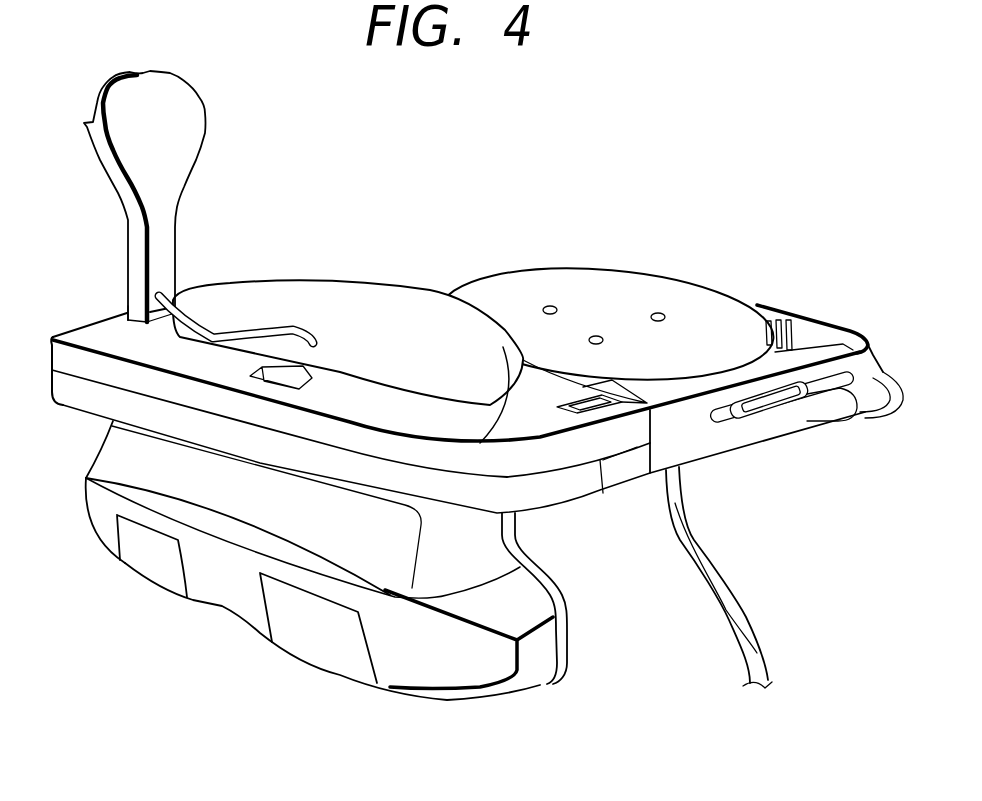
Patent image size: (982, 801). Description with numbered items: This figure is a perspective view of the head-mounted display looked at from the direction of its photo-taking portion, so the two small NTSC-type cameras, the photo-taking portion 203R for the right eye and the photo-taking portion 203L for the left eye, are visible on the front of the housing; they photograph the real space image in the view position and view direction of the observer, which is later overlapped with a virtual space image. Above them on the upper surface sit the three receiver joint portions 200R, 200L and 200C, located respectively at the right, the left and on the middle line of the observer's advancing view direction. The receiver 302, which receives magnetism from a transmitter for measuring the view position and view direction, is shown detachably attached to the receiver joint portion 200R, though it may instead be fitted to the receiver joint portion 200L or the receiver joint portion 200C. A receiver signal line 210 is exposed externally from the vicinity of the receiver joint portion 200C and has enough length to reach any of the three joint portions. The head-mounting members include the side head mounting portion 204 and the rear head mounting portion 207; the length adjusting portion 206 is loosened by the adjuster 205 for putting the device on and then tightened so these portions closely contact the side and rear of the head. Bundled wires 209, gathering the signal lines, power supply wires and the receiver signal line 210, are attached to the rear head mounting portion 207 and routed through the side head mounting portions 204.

The receiver 302 is at (177, 113).
The receiver joint portion 200R is at (128, 307).
The receiver signal line 210 is at (228, 297).
The receiver joint portion 200C is at (280, 373).
The receiver joint portion 200L is at (587, 400).
The rear head mounting portion 207 is at (733, 307).
The length adjusting portion 206 is at (812, 332).
The adjuster 205 is at (776, 401).
The side head mounting portion 204 is at (697, 440).
The bundled wires 209 is at (723, 607).
The photo-taking portion for right eye 203R is at (150, 560).
The photo-taking portion for left eye 203L is at (307, 637).